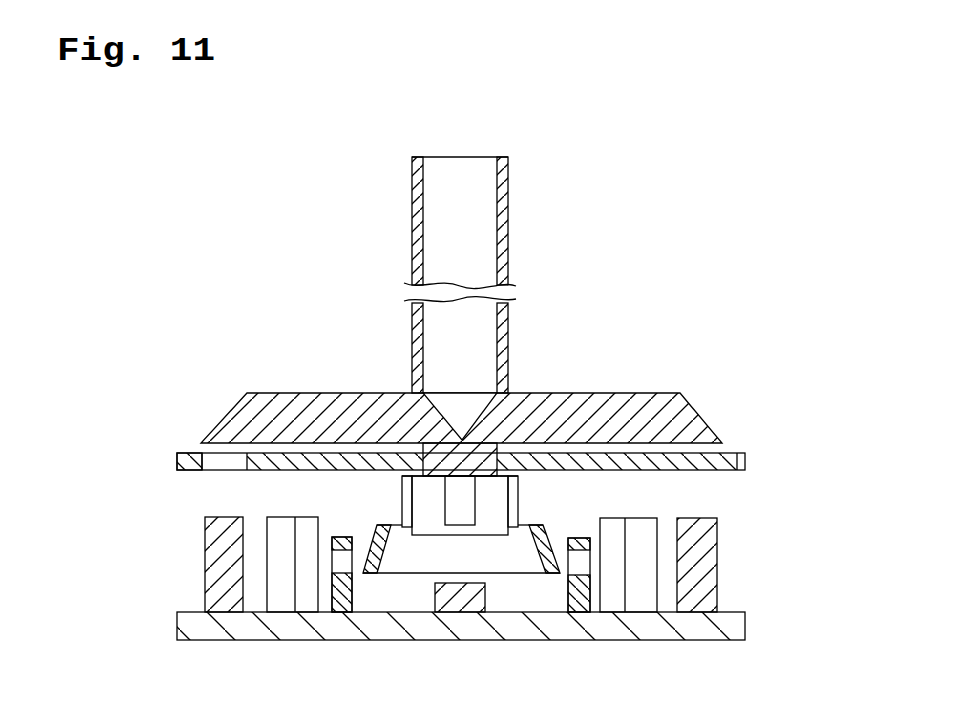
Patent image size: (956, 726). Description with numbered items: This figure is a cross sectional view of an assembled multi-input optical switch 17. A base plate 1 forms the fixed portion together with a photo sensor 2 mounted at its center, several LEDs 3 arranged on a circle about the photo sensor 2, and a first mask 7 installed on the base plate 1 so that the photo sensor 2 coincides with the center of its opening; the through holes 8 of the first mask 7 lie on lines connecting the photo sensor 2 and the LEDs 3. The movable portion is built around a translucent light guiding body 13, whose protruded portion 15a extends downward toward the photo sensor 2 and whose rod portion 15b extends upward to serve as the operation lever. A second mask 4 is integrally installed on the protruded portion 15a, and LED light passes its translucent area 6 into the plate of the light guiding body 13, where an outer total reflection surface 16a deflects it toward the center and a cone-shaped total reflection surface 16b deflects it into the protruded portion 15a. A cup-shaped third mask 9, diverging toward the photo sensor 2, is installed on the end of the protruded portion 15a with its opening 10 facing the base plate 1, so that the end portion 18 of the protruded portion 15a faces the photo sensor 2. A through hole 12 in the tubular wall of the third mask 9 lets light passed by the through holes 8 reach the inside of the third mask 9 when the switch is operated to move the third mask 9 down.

The base plate 1 is at (730, 627).
The photo sensor 2 is at (463, 602).
The LEDs 3 is at (278, 577).
The second mask 4 is at (746, 462).
The translucent area 6 is at (212, 471).
The first mask 7 is at (340, 593).
The through holes 8 is at (338, 553).
The third mask 9 is at (510, 523).
The opening 10 is at (407, 575).
The through hole 12 is at (460, 505).
The light guiding body 13 is at (673, 418).
The protruded portion 15a is at (478, 458).
The rod portion 15b is at (508, 186).
The total reflection surface 16a is at (228, 410).
The total reflection surface 16b is at (433, 417).
The assembly 17 is at (713, 233).
The end portion 18 is at (402, 498).